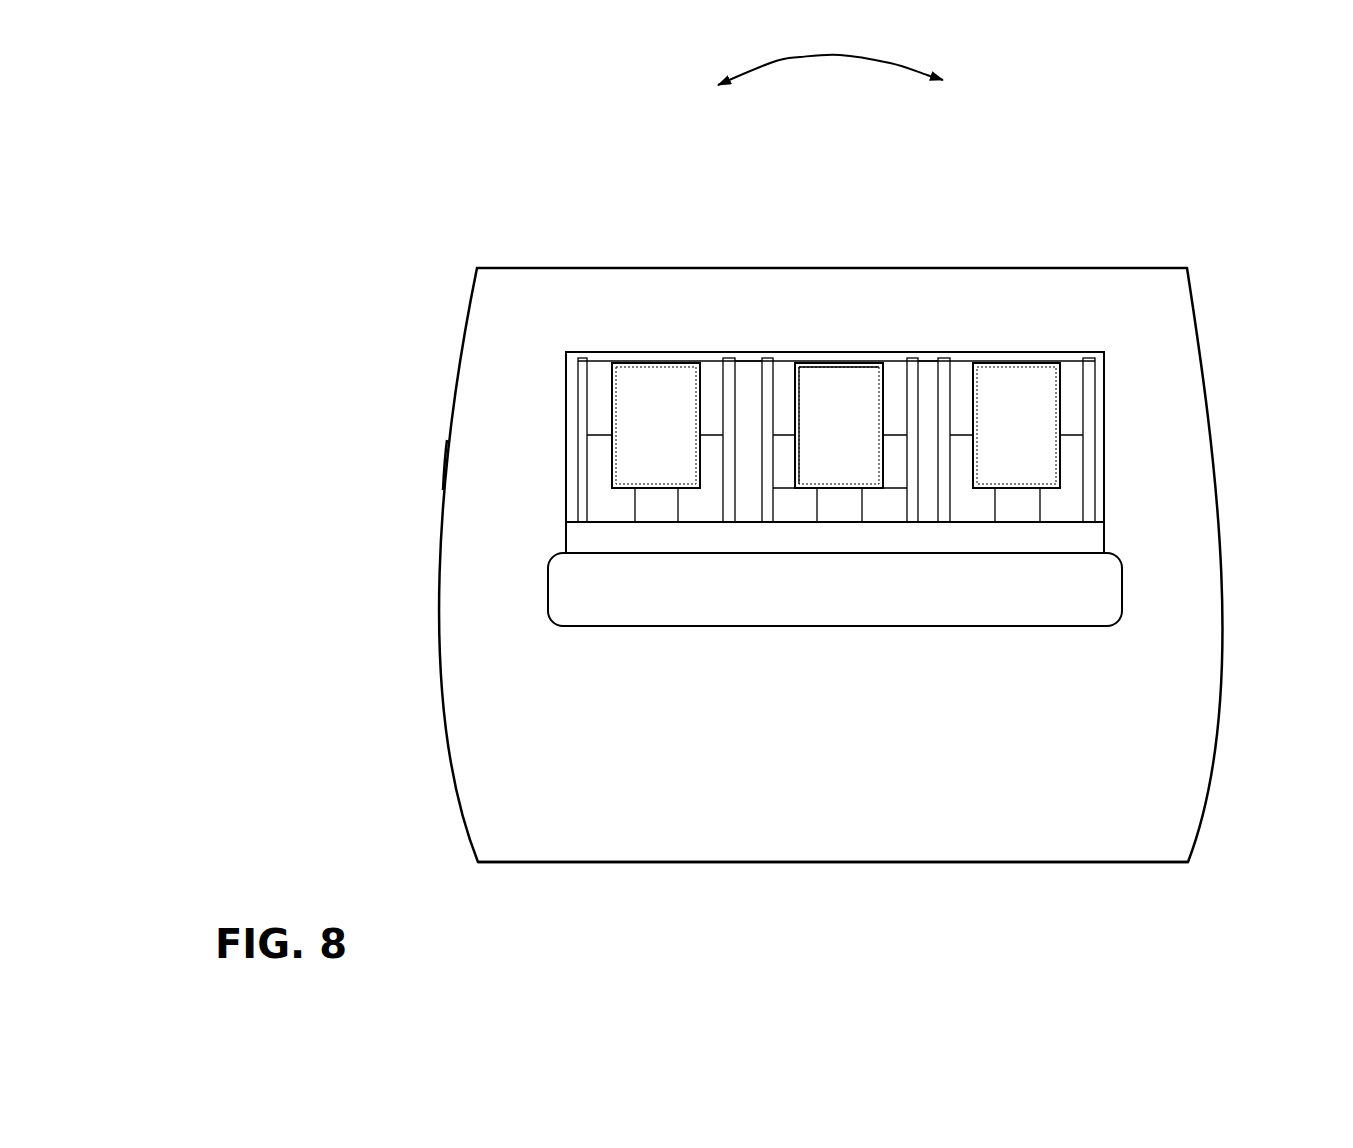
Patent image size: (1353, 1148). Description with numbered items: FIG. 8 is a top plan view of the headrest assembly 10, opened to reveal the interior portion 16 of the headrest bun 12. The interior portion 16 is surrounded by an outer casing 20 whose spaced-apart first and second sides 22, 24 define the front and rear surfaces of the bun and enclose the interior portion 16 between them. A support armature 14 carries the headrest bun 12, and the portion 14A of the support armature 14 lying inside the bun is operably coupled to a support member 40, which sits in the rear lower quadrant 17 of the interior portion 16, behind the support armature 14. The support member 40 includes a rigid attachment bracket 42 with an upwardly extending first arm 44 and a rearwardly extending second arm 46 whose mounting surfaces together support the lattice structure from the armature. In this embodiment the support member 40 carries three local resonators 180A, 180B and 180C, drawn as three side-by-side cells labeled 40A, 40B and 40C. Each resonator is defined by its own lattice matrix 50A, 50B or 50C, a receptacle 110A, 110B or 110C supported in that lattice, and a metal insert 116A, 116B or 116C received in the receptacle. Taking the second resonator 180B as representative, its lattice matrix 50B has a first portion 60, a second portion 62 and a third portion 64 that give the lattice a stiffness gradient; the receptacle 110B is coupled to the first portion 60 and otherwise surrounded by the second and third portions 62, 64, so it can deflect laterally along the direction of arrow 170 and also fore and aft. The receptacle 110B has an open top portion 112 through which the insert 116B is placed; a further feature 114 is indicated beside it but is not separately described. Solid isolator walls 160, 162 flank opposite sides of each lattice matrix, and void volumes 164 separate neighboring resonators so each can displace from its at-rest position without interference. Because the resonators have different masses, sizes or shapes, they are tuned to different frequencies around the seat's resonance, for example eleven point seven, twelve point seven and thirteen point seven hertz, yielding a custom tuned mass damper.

The headrest assembly 10 is at (481, 234).
The headrest bun 12 is at (438, 426).
The support armature 14 is at (528, 591).
The portion of the support armature 14A is at (1110, 602).
The interior portion 16 is at (548, 731).
The rear lower quadrant 17 is at (1082, 314).
The outer casing 20 is at (447, 468).
The first side 22 is at (775, 863).
The second side 24 is at (840, 420).
The support member 40 is at (1124, 402).
The first gate structure 40A is at (632, 353).
The second gate structure 40B is at (800, 355).
The third gate structure 40C is at (968, 353).
The attachment bracket 42 is at (1125, 543).
The first arm 44 is at (1097, 538).
The second arm 46 is at (1097, 357).
The lattice matrix 50A is at (573, 492).
The lattice matrix 50B is at (790, 520).
The lattice matrix 50C is at (1058, 522).
The first portion 60 is at (837, 507).
The second portion 62 is at (783, 502).
The third portion 64 is at (782, 397).
The receptacle 110A is at (617, 452).
The receptacle 110B is at (887, 377).
The receptacle 110C is at (1060, 473).
The open top portion 112 is at (803, 390).
The high-k layer 114 is at (842, 400).
The insert 116A is at (638, 402).
The insert 116B is at (818, 382).
The insert 116C is at (1023, 393).
The solid isolator wall 160 is at (583, 423).
The solid isolator wall 162 is at (733, 377).
The void volumes 164 is at (754, 460).
The lateral axis arrow 170 is at (772, 65).
The first resonator 180A is at (657, 343).
The second resonator 180B is at (866, 347).
The third resonator 180C is at (1026, 342).